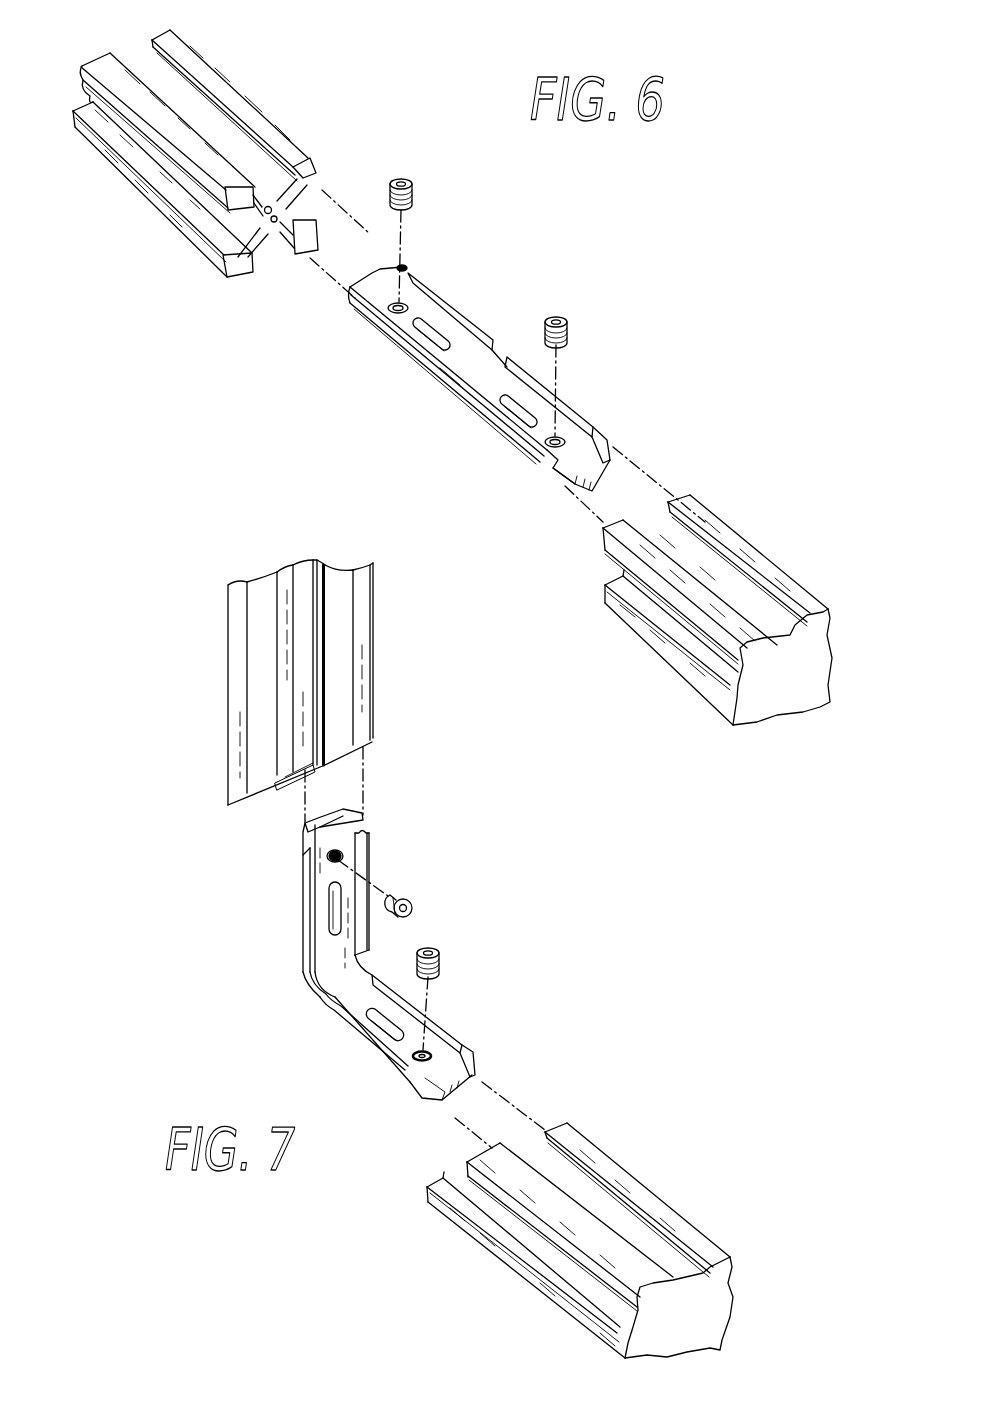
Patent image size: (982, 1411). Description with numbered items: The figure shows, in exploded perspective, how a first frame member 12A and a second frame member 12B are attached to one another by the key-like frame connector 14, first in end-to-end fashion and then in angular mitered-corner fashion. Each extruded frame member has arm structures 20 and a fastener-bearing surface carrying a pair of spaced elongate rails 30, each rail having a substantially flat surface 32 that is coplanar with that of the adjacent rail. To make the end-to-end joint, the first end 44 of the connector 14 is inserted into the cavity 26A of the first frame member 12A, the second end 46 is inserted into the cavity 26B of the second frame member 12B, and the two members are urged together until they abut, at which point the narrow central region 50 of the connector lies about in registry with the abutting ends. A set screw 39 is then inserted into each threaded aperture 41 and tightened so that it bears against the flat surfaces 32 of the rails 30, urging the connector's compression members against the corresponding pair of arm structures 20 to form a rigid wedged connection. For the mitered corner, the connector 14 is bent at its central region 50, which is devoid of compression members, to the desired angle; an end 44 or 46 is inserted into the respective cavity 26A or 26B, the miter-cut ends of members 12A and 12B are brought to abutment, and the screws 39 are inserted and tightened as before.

In FIG. 6, the first frame member 12A is at (233, 179).
In FIG. 7, the first frame member 12A is at (371, 682).
In FIG. 6, the second frame member 12B is at (730, 580).
In FIG. 7, the second frame member 12B is at (591, 1214).
In FIG. 6, the cavity of first frame member 26A is at (143, 72).
In FIG. 7, the cavity of first frame member 26A is at (325, 733).
In FIG. 6, the cavity of second frame member 26B is at (707, 567).
In FIG. 7, the cavity of second frame member 26B is at (570, 1187).
In FIG. 6, the flat surface 32 is at (268, 195).
In FIG. 6, the arm structure 20 is at (313, 168).
In FIG. 6, the rail 30 is at (268, 195).
In FIG. 6, the frame connector 14 is at (478, 390).
In FIG. 7, the frame connector 14 is at (362, 853).
In FIG. 6, the set screw 39 is at (412, 183).
In FIG. 7, the set screw 39 is at (388, 955).
In FIG. 6, the first end 44 is at (368, 270).
In FIG. 6, the threaded aperture 41 is at (407, 306).
In FIG. 7, the threaded aperture 41 is at (422, 1056).
In FIG. 6, the narrow central region 50 is at (457, 377).
In FIG. 7, the narrow central region 50 is at (355, 954).
In FIG. 6, the second end 46 is at (587, 480).